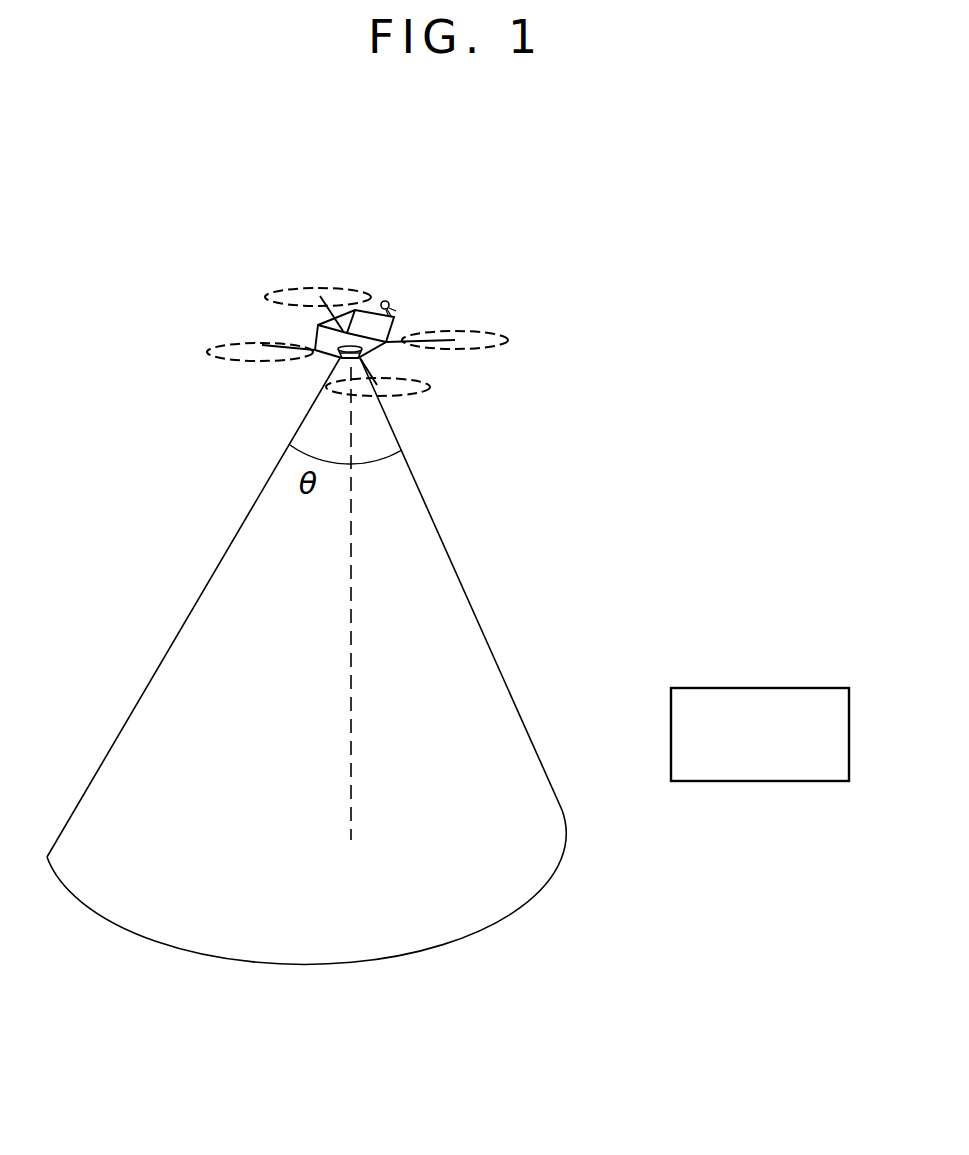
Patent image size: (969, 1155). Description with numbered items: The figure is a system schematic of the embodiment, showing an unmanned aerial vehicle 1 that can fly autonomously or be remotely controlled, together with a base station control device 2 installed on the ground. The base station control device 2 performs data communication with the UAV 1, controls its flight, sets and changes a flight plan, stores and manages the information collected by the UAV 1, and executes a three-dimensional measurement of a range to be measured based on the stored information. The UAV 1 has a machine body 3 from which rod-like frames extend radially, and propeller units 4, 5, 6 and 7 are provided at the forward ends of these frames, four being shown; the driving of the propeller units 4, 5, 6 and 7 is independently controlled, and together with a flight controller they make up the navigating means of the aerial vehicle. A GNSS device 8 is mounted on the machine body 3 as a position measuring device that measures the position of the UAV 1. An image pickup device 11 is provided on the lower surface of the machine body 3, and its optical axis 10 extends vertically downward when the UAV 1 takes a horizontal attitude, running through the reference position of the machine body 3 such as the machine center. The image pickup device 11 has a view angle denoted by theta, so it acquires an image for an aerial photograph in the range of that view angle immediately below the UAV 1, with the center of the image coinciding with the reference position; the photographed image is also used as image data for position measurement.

The unmanned aerial vehicle 1 is at (398, 317).
The base station control device 2 is at (765, 688).
The machine body 3 is at (391, 334).
The propeller unit 4 is at (280, 290).
The propeller unit 5 is at (490, 332).
The propeller unit 6 is at (218, 358).
The propeller unit 7 is at (403, 398).
The GNSS device 8 is at (388, 299).
The optical axis 10 is at (352, 628).
The image pickup device 11 is at (338, 363).